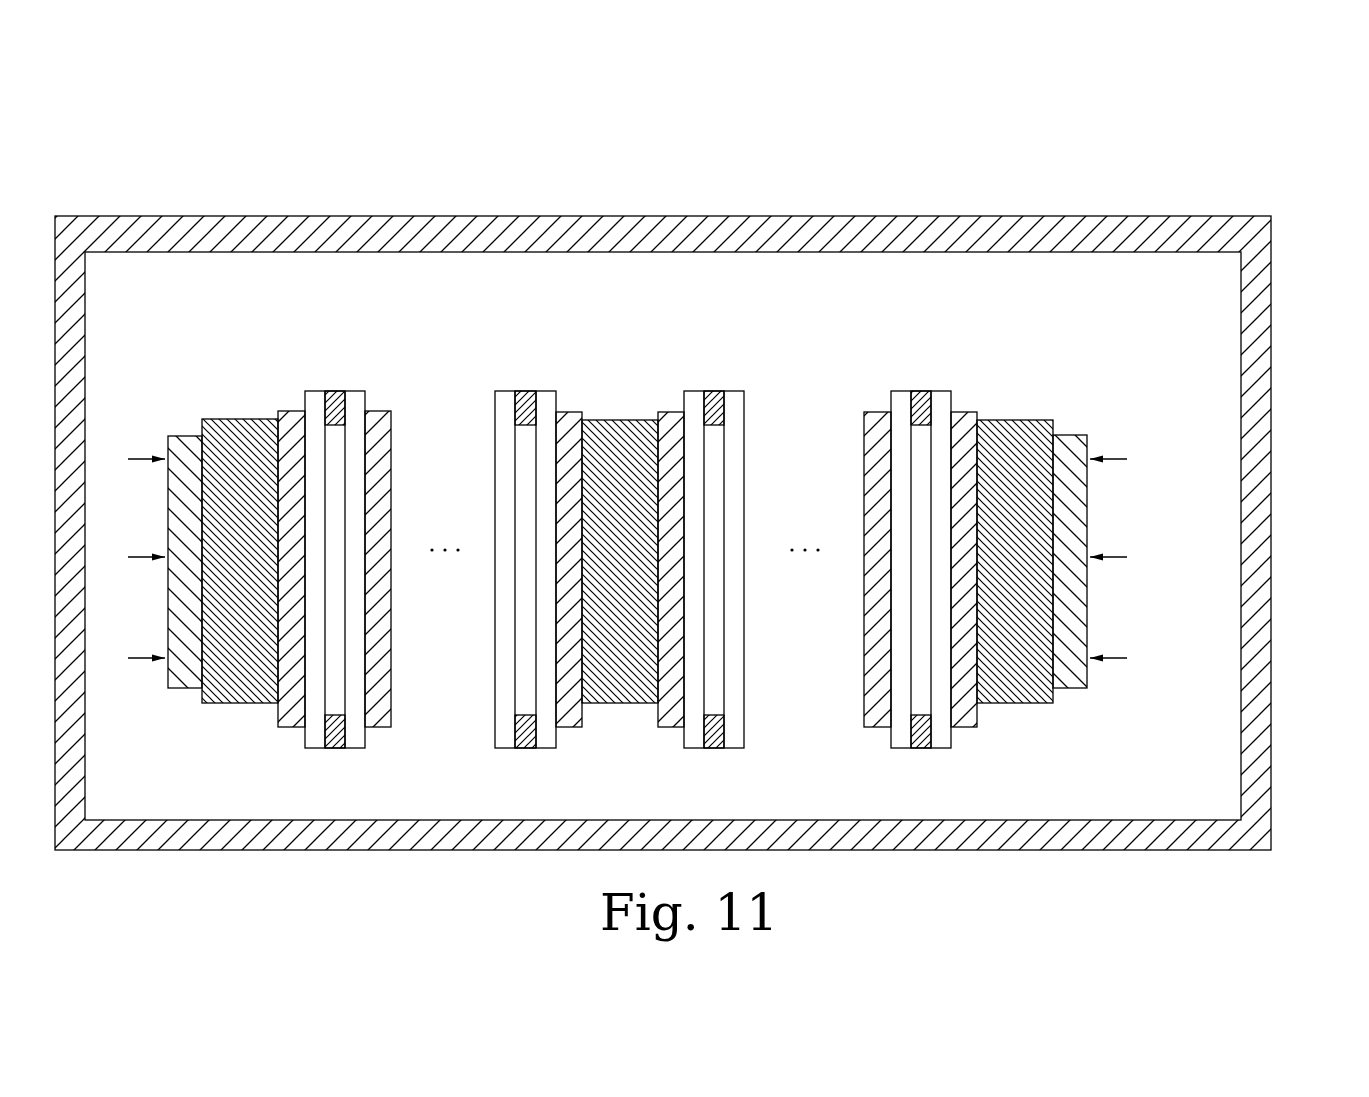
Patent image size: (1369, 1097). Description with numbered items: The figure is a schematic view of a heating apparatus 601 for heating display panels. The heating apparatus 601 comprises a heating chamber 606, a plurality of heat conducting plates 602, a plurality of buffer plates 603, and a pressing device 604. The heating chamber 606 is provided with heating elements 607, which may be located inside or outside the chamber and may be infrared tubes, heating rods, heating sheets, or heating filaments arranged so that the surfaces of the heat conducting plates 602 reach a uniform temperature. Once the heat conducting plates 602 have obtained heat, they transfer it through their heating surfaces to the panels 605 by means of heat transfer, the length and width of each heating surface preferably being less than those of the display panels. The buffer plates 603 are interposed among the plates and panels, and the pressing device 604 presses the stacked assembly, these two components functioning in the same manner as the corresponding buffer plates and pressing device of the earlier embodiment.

The heating apparatus 601 is at (711, 464).
The heat conducting plate 602 is at (1018, 409).
The buffer plate 603 is at (876, 393).
The pressing device 604 is at (1089, 424).
The panel 605 is at (528, 376).
The heating chamber 606 is at (1271, 401).
The heating element 607 is at (1255, 473).